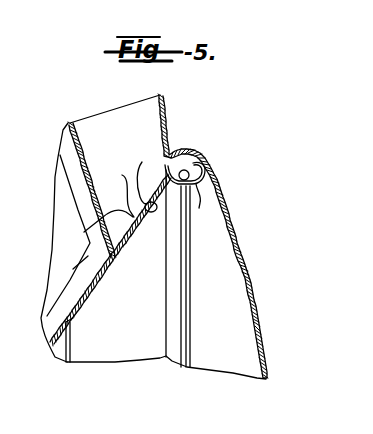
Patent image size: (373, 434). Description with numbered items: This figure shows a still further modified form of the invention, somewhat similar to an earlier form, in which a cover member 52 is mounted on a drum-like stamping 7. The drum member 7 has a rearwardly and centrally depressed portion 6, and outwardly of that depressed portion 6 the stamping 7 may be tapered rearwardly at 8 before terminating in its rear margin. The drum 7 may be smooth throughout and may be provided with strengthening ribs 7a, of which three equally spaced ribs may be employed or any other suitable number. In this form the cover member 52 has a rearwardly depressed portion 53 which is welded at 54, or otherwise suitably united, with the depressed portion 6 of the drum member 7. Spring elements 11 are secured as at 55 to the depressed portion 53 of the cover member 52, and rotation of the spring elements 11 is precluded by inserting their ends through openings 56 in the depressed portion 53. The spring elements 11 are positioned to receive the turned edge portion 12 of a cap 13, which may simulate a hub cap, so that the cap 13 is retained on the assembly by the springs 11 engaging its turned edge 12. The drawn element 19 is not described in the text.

The depressed portion 6 is at (70, 318).
The drum-like stamping 7 is at (53, 185).
The strengthening ribs 7a is at (71, 267).
The tapered portion 8 is at (80, 155).
The spring elements 11 is at (210, 208).
The turned edge portion 12 is at (178, 267).
The cap 13 is at (246, 268).
The fastening line 19 is at (118, 189).
The cover member 52 is at (168, 132).
The rearwardly depressed portion 53 is at (128, 348).
The weld 54 is at (90, 288).
The securing point 55 is at (140, 167).
The openings 56 is at (95, 229).